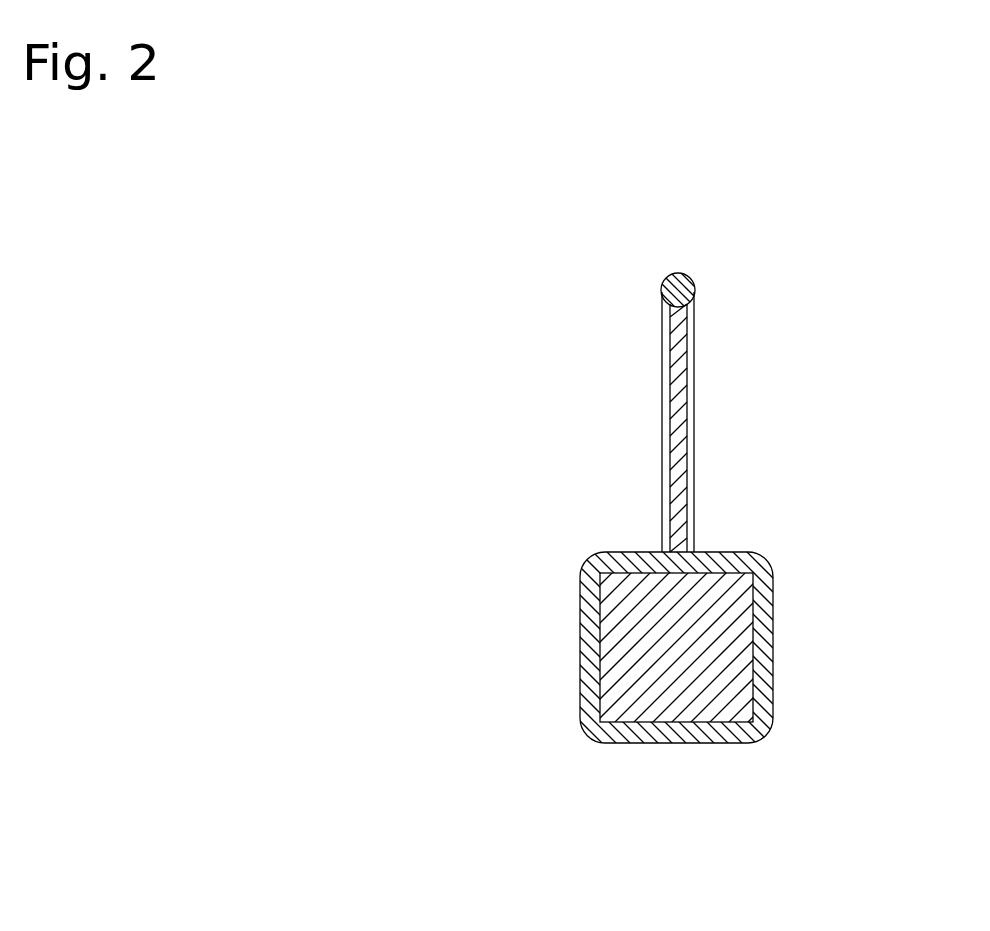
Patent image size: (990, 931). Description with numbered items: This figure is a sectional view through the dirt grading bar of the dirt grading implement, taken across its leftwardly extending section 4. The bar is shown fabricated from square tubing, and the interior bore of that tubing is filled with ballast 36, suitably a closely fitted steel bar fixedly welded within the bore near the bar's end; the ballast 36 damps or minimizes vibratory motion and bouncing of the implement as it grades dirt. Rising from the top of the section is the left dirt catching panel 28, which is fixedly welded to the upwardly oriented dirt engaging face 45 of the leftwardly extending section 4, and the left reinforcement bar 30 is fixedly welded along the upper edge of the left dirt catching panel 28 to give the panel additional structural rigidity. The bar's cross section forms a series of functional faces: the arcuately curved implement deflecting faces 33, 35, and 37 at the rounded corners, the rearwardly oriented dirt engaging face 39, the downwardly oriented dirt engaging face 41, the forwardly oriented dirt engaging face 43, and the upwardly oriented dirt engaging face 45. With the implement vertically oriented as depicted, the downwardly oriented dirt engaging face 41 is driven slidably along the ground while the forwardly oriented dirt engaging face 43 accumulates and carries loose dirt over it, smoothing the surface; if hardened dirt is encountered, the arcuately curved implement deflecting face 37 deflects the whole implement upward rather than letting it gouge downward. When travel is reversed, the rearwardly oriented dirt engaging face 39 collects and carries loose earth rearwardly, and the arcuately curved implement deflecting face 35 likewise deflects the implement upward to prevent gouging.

The leftwardly extending section 4 is at (806, 677).
The left dirt catching panel 28 is at (673, 360).
The left reinforcement bar 30 is at (690, 278).
The arcuately curved implement deflecting face 33 is at (770, 567).
The arcuately curved implement deflecting face 35 is at (583, 730).
The ballast 36 is at (732, 598).
The arcuately curved implement deflecting face 37 is at (760, 730).
The rearwardly oriented dirt engaging face 39 is at (580, 653).
The downwardly oriented dirt engaging face 41 is at (675, 742).
The forwardly oriented dirt engaging face 43 is at (773, 636).
The upwardly oriented dirt engaging face 45 is at (628, 550).